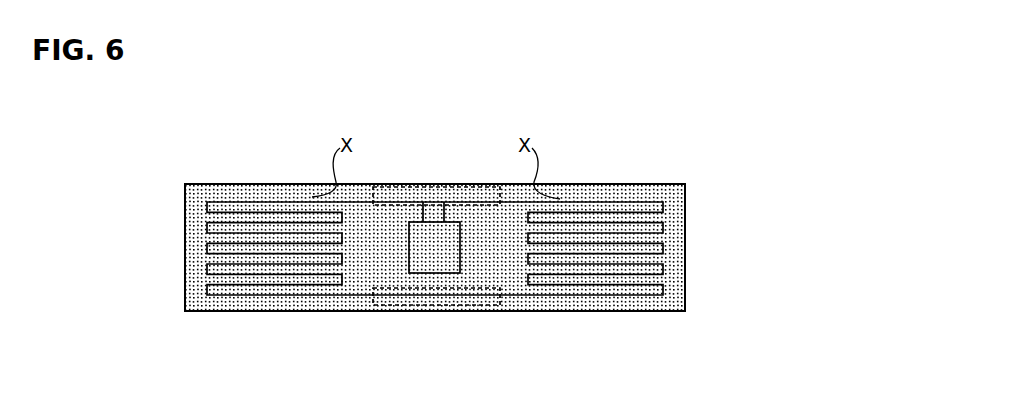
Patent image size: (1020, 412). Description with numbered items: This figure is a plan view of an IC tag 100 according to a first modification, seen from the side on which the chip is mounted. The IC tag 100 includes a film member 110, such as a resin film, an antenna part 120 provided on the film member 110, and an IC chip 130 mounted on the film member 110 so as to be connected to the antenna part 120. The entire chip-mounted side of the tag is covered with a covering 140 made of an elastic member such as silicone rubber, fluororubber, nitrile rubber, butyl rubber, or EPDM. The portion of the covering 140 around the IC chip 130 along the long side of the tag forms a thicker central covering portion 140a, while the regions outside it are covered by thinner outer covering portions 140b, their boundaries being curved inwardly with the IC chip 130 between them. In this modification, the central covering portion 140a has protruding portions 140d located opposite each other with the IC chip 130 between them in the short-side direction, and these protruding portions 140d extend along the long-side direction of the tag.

The IC tag 100 is at (281, 100).
The film member 110 is at (593, 185).
The antenna part 120 is at (610, 295).
The IC chip 130 is at (442, 242).
The covering 140 is at (257, 215).
The central covering portion 140a is at (413, 213).
The outer covering portions 140b is at (272, 268).
The protruding portions 140d is at (383, 205).